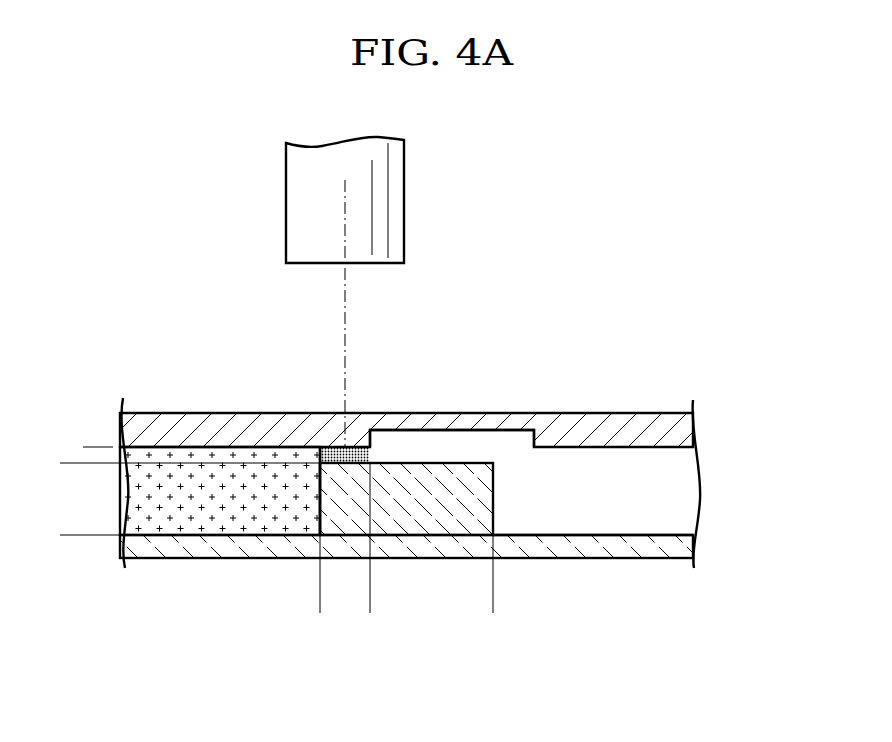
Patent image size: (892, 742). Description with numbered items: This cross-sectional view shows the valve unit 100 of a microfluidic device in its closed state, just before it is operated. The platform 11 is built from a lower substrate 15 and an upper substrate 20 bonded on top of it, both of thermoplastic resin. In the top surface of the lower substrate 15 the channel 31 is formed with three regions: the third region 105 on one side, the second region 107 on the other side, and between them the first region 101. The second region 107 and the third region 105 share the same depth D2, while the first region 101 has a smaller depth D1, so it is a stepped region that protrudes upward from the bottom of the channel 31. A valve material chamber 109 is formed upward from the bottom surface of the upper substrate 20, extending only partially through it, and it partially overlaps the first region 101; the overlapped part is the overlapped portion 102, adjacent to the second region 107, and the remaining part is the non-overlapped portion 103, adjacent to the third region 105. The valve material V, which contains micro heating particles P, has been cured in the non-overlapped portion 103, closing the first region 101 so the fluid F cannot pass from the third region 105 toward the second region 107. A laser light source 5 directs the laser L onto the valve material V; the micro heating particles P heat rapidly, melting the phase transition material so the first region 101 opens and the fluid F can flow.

The laser light source 5 is at (292, 198).
The laser L is at (344, 318).
The valve unit 100 is at (168, 352).
The platform 11 is at (773, 425).
The upper substrate 20 is at (680, 430).
The lower substrate 15 is at (690, 547).
The valve material chamber 109 is at (484, 437).
The third region 105 is at (260, 537).
The fluid F is at (177, 520).
The micro heating particles P is at (358, 456).
The valve material V is at (327, 456).
The first region 101 is at (445, 625).
The non-overlapped portion 103 is at (370, 608).
The overlapped portion 102 is at (493, 608).
The second region 107 is at (533, 537).
The channel 31 is at (533, 675).
The depth of the first region D1 is at (90, 490).
The depth of the second and third regions D2 is at (64, 463).